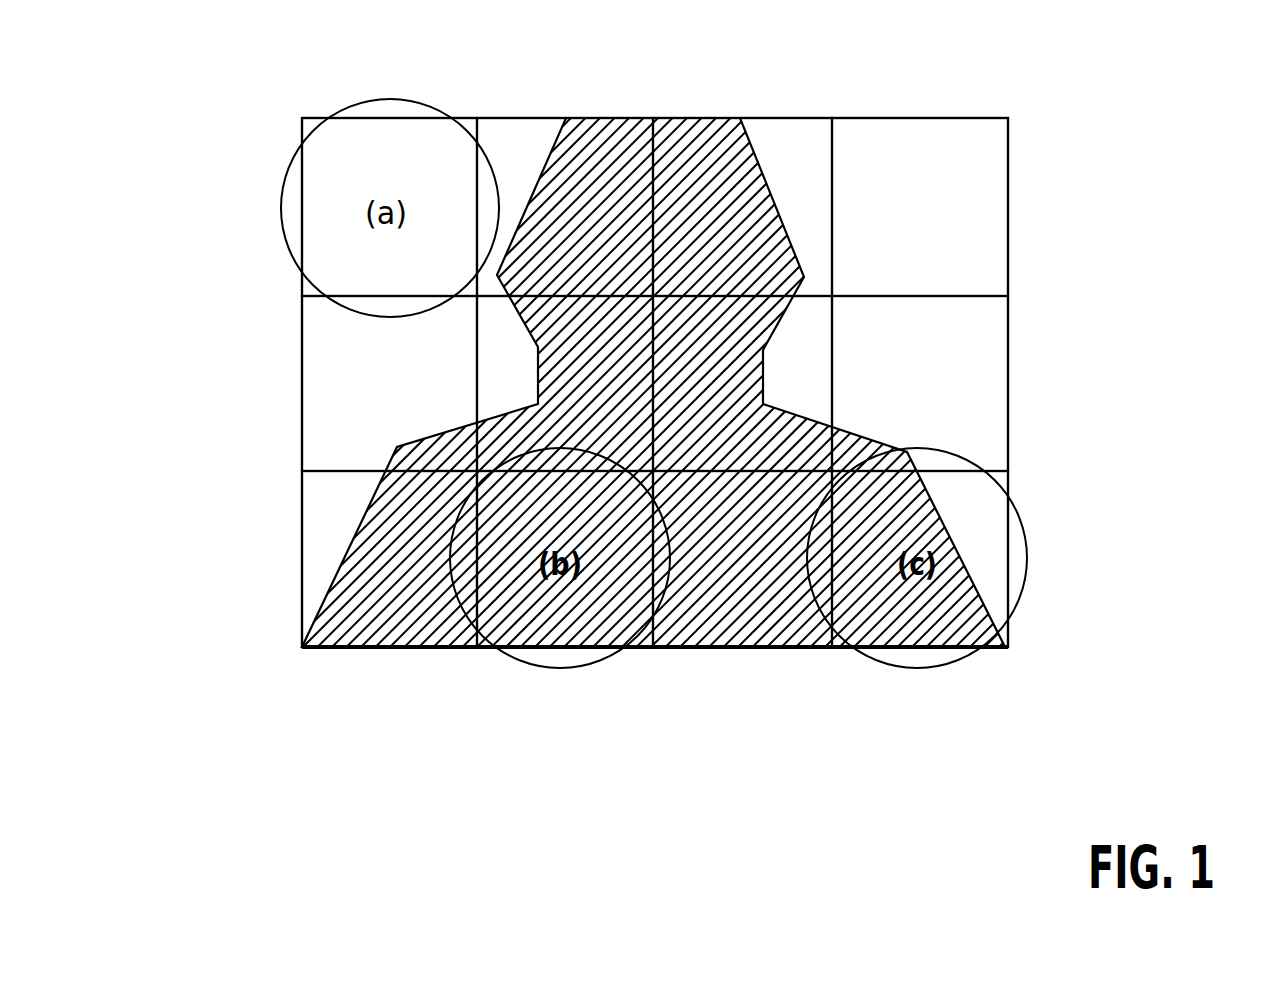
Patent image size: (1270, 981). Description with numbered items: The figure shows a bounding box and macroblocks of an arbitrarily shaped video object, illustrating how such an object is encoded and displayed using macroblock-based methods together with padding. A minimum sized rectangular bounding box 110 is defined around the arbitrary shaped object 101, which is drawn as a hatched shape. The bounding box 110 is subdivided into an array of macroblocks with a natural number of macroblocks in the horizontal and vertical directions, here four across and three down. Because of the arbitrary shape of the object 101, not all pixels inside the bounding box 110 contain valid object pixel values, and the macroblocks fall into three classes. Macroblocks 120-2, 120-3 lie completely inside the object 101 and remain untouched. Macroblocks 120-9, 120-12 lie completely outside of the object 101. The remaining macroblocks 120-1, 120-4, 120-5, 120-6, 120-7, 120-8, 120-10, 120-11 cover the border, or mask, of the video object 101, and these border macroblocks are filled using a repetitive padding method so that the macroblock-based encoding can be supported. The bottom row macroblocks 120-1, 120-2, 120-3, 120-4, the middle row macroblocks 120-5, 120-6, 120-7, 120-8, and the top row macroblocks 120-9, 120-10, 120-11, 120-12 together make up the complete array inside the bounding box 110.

The arbitrary shaped object 101 is at (347, 543).
The bounding box 110 is at (1140, 152).
The macroblock 120-1 is at (395, 648).
The macroblock 120-2 is at (573, 648).
The macroblock 120-3 is at (768, 648).
The macroblock 120-4 is at (920, 648).
The macroblock 120-5 is at (297, 413).
The macroblock 120-6 is at (485, 348).
The macroblock 120-7 is at (808, 330).
The macroblock 120-8 is at (1008, 398).
The macroblock 120-9 is at (382, 118).
The macroblock 120-10 is at (558, 127).
The macroblock 120-11 is at (777, 90).
The macroblock 120-12 is at (913, 118).